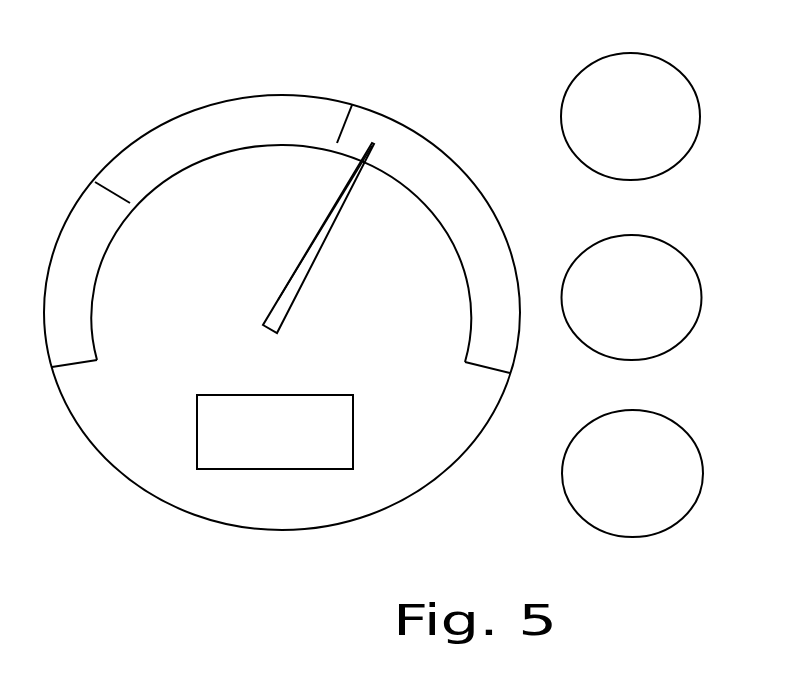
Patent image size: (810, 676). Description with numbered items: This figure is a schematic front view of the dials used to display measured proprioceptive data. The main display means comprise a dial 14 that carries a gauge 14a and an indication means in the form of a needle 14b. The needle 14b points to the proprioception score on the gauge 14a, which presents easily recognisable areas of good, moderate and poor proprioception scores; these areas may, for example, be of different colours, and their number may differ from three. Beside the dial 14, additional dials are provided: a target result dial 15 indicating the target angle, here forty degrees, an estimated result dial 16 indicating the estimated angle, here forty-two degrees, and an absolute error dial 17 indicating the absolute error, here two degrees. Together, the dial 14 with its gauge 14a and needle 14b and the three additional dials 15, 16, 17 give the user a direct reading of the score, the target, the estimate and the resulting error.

The dial 14 is at (188, 223).
The gauge 14a is at (243, 122).
The needle 14b is at (285, 297).
The target result dial 15 is at (642, 143).
The estimated result dial 16 is at (650, 333).
The absolute error dial 17 is at (650, 508).